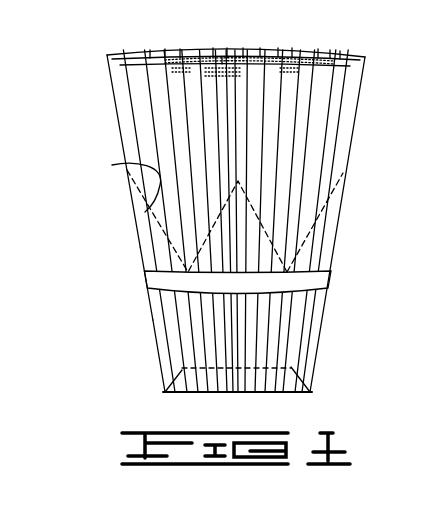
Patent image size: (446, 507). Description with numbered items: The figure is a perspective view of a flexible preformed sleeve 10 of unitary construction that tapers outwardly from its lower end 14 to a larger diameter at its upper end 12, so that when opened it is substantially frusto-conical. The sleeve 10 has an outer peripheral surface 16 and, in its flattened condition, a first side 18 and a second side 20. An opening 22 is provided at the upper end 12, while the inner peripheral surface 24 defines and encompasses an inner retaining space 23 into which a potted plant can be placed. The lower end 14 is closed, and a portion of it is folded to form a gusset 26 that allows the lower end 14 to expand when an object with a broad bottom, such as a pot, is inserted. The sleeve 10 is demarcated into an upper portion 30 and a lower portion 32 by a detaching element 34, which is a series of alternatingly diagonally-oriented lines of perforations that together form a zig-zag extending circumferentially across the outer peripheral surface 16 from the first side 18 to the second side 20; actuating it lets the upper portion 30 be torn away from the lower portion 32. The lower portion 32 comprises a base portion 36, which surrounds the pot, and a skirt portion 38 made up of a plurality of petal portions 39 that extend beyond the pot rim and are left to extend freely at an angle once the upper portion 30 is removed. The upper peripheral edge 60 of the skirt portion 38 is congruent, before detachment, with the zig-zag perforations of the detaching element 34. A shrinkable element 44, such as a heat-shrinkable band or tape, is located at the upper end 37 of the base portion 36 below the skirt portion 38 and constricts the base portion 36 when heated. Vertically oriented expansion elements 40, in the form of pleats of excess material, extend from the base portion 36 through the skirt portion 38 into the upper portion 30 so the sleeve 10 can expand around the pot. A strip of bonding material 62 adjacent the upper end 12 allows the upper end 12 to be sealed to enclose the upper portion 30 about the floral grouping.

The flexible preformed sleeve 10 is at (88, 213).
The upper end 12 is at (107, 56).
The lower end 14 is at (192, 396).
The outer peripheral surface 16 is at (133, 122).
The first side 18 is at (120, 151).
The second side 20 is at (365, 71).
The opening 22 is at (283, 50).
The inner retaining space 23 is at (222, 57).
The inner peripheral surface 24 is at (212, 52).
The gusset 26 is at (281, 368).
The upper portion 30 is at (359, 135).
The lower portion 32 is at (325, 330).
The detaching element 34 is at (317, 220).
The base portion 36 is at (157, 339).
The upper end of the base portion 37 is at (150, 306).
The skirt portion 38 is at (145, 240).
The petal portions 39 is at (250, 192).
The expansion element 40 is at (152, 82).
The shrinkable element 44 is at (146, 276).
The upper peripheral edge 60 is at (112, 165).
The strip of bonding material 62 is at (318, 61).